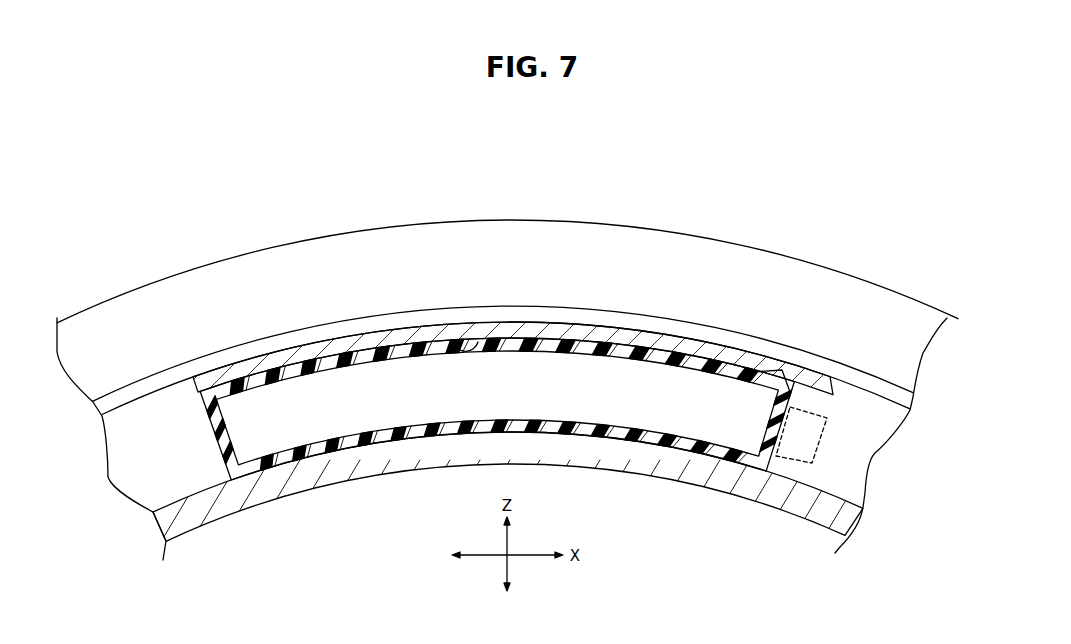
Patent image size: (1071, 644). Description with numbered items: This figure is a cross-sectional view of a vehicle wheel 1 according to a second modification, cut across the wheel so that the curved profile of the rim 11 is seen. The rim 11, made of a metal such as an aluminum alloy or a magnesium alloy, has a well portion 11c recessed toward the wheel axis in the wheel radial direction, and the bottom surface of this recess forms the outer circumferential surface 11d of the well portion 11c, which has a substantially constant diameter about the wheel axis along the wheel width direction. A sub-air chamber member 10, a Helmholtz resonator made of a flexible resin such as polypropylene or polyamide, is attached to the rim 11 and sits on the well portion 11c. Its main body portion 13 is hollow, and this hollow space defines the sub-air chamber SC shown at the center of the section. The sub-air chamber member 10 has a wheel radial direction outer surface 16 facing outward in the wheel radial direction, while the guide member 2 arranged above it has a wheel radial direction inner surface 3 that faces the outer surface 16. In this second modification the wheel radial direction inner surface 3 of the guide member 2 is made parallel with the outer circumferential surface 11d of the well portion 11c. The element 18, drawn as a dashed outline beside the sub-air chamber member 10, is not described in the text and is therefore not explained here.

The vehicle wheel 1 is at (744, 229).
The rim 11 is at (506, 219).
The well portion 11c is at (529, 496).
The outer circumferential surface 11d is at (843, 493).
The guide member 2 is at (544, 330).
The wheel radial direction inner surface 3 is at (453, 342).
The wheel radial direction outer surface 16 is at (389, 345).
The sub-air chamber member 10 is at (496, 375).
The main body portion 13 is at (646, 348).
The wedge member 18 is at (815, 447).
The sub-air chamber SC is at (536, 393).